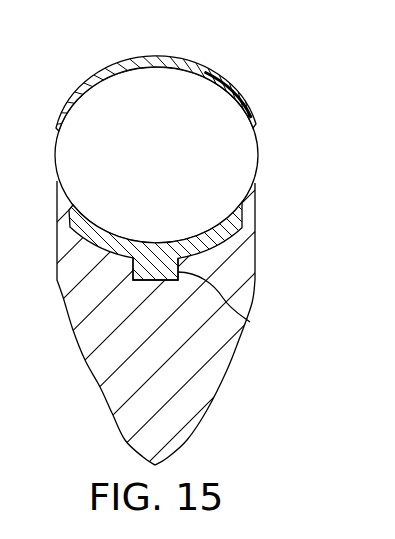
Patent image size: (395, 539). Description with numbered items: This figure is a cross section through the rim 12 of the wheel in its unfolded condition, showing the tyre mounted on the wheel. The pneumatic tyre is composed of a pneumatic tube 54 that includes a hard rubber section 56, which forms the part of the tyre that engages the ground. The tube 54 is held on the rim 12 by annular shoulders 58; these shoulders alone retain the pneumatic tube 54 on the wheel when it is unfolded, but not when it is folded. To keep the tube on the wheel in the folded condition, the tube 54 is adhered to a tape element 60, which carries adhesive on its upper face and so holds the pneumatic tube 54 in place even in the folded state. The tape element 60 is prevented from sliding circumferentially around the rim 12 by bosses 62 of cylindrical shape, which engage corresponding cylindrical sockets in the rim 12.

The rim 12 is at (230, 373).
The pneumatic tube 54 is at (258, 151).
The hard rubber section 56 is at (157, 56).
The annular shoulders 58 is at (256, 208).
The tape element 60 is at (244, 250).
The bosses 62 is at (246, 318).